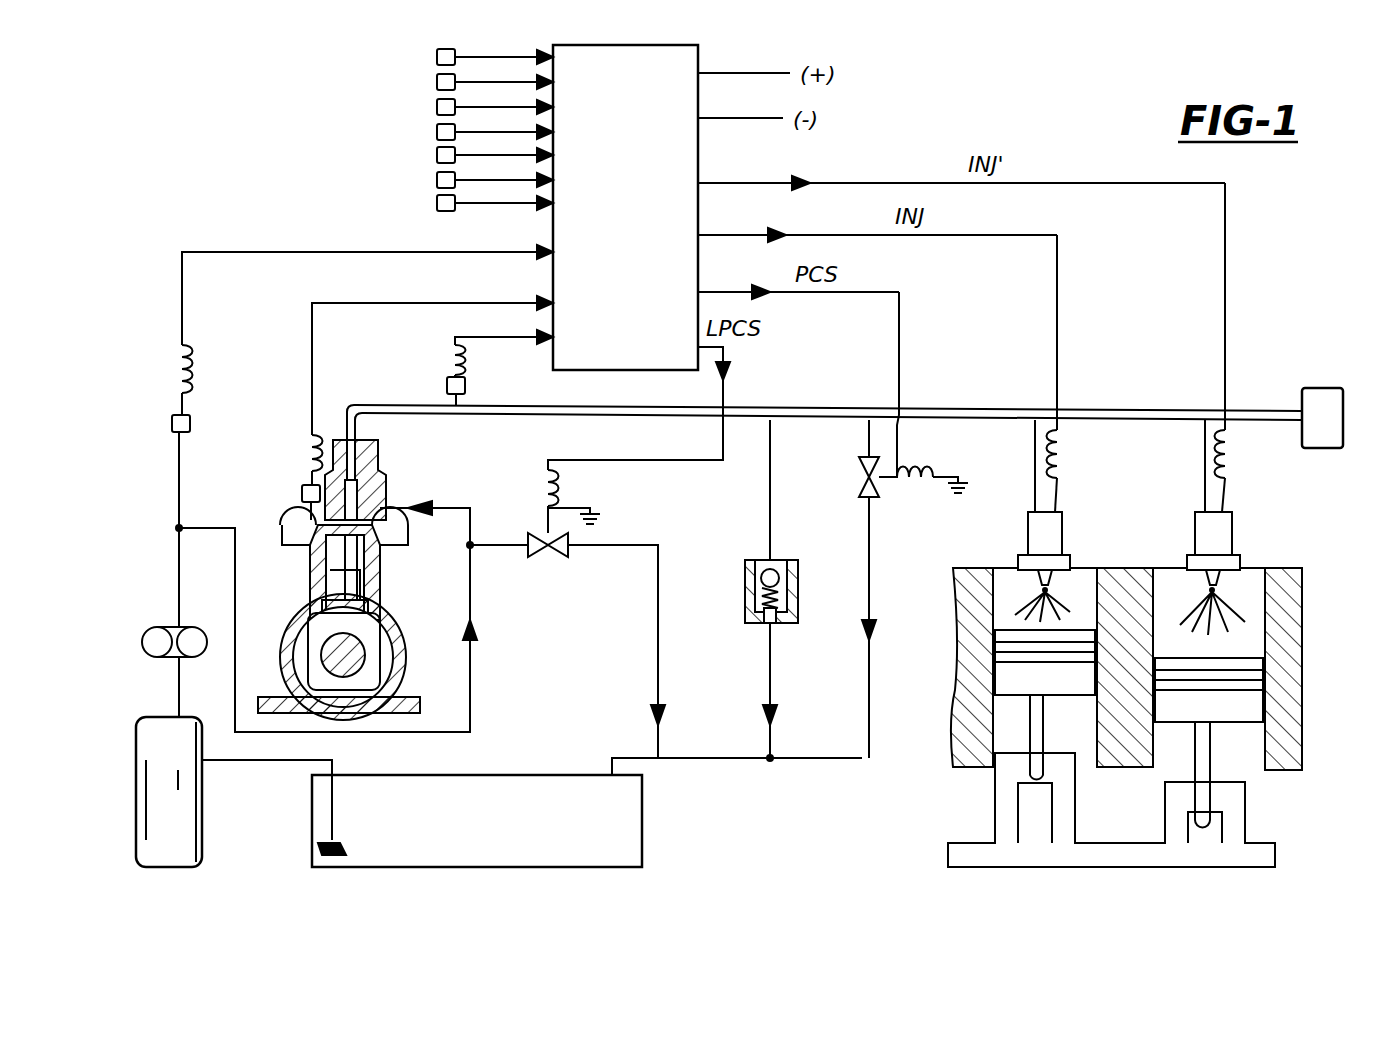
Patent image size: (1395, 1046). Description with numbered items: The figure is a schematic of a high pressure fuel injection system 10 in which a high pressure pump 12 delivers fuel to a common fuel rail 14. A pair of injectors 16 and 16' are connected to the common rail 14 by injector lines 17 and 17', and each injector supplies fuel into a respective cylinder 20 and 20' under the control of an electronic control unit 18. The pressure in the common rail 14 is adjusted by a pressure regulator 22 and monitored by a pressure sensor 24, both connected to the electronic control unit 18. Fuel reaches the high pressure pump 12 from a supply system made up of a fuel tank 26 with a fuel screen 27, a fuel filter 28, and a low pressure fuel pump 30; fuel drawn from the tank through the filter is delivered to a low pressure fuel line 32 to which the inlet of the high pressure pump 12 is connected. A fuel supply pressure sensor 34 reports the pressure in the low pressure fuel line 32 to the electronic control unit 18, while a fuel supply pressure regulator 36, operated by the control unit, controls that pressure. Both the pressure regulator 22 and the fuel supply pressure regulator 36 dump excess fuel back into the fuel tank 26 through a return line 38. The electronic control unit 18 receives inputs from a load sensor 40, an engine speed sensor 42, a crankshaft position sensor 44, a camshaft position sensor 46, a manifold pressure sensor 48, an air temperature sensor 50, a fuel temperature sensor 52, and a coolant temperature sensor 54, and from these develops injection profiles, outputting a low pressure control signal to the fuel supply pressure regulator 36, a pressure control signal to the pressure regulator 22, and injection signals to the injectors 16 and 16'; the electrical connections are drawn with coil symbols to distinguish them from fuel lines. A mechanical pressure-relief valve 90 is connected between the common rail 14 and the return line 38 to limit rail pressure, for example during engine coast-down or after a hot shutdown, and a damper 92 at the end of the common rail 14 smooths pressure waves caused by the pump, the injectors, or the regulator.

The fuel injection system 10 is at (905, 157).
The high pressure pump 12 is at (398, 556).
The common fuel rail 14 is at (506, 415).
The injector 16 is at (1070, 527).
The injector 16' is at (1176, 544).
The injector line 17 is at (1012, 373).
The injector line 17' is at (1167, 347).
The electronic control unit 18 is at (628, 230).
The cylinder 20 is at (1081, 717).
The cylinder 20' is at (1260, 698).
The pressure regulator 22 is at (880, 492).
The pressure sensor 24 is at (466, 386).
The fuel tank 26 is at (595, 855).
The fuel screen 27 is at (345, 850).
The fuel filter 28 is at (203, 838).
The low pressure fuel pump 30 is at (142, 642).
The low pressure fuel line 32 is at (178, 548).
The fuel supply pressure sensor 34 is at (172, 423).
The fuel supply pressure regulator 36 is at (541, 561).
The return line 38 is at (710, 760).
The load sensor 40 is at (302, 492).
The engine speed sensor 42 is at (437, 57).
The crankshaft position sensor 44 is at (437, 82).
The camshaft position sensor 46 is at (437, 107).
The manifold pressure sensor 48 is at (437, 132).
The air temperature sensor 50 is at (437, 155).
The fuel temperature sensor 52 is at (437, 180).
The coolant temperature sensor 54 is at (437, 203).
The mechanical pressure-relief valve 90 is at (747, 562).
The damper 92 is at (1318, 389).